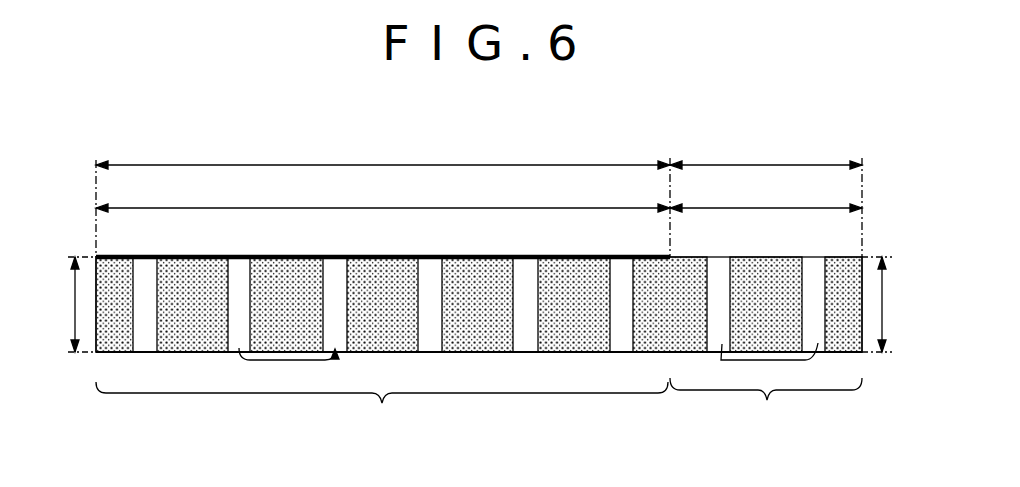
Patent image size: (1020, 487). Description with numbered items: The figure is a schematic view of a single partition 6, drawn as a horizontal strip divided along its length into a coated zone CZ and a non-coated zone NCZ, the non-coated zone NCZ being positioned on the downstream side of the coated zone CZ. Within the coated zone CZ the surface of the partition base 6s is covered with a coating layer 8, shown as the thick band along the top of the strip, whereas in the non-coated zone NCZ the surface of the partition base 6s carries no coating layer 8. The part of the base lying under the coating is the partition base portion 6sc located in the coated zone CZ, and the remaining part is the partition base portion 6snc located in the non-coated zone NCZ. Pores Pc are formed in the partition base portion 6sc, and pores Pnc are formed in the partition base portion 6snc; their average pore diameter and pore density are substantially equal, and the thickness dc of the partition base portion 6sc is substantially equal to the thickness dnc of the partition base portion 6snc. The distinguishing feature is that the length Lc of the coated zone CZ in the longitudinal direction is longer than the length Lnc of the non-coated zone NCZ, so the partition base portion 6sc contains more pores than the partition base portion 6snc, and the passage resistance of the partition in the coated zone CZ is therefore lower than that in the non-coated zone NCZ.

The partition 6 is at (496, 275).
The coating layer 8 is at (128, 256).
The partition base 6s is at (114, 354).
The partition base portion located in the coated zone 6sc is at (382, 408).
The partition base portion located in the non-coated zone 6snc is at (766, 404).
The length of the coated zone Lc is at (383, 156).
The length of the non-coated zone Lnc is at (766, 155).
The coated zone CZ is at (383, 199).
The non-coated zone NCZ is at (766, 197).
The thickness of the partition base portion located in the coated zone dc is at (73, 283).
The thickness of the partition base portion located in the non-coated zone dnc is at (883, 315).
The pores formed in the partition base portion located in the coated zone Pc is at (305, 365).
The pores formed in the partition base portion located in the non-coated zone Pnc is at (745, 359).